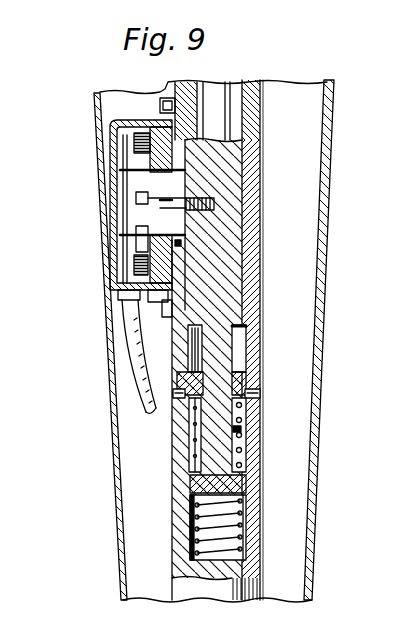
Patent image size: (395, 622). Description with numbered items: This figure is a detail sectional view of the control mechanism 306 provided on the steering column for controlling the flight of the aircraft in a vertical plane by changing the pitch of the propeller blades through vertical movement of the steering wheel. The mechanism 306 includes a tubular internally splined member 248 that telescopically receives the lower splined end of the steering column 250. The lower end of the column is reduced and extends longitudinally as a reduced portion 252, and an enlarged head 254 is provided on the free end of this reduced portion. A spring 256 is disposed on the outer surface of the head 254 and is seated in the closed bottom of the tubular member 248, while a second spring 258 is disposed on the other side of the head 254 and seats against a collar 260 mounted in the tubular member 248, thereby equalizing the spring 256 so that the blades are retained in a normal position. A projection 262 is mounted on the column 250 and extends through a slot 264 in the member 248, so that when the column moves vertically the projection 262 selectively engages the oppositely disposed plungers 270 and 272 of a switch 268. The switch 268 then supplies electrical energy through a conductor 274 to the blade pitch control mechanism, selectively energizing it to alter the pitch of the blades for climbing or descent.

The tubular internally splined member 248 is at (252, 108).
The steering column 250 is at (229, 186).
The reduced portion 252 is at (222, 355).
The enlarged head 254 is at (243, 486).
The spring 256 is at (243, 522).
The second spring 258 is at (236, 437).
The collar 260 is at (243, 382).
The projection 262 is at (168, 203).
The slot 264 is at (181, 246).
The switch 268 is at (143, 154).
The plunger 270 is at (148, 240).
The plunger 272 is at (150, 176).
The conductor 274 is at (134, 357).
The control mechanism 306 is at (78, 146).